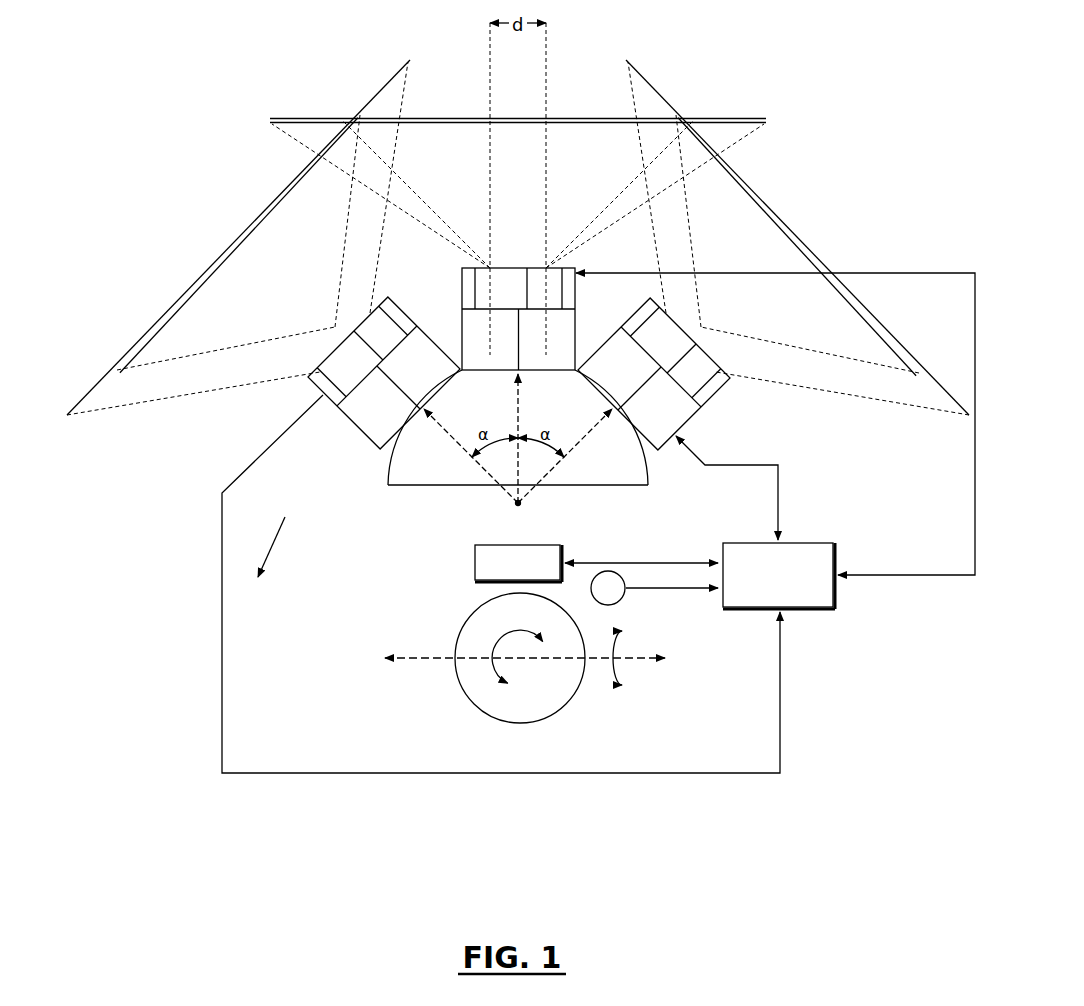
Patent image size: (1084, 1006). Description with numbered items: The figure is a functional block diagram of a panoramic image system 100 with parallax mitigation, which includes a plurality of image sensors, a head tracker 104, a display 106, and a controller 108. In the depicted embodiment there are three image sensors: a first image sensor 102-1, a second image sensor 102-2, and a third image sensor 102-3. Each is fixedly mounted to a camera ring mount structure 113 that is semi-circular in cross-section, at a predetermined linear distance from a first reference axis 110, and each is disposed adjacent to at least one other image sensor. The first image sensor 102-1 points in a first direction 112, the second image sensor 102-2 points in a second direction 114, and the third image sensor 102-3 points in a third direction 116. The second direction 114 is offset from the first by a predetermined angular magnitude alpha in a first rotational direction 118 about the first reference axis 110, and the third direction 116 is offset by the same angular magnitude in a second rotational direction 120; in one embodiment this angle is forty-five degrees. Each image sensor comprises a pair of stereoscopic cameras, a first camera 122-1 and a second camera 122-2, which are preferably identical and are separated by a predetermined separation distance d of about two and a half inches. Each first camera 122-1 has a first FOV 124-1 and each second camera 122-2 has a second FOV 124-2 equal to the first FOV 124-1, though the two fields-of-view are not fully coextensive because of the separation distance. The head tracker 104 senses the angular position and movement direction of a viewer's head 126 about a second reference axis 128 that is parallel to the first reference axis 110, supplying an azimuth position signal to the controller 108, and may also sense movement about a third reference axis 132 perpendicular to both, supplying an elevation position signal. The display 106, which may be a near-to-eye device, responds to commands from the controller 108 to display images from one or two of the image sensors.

The panoramic image system 100 is at (162, 492).
The first image sensor 102-1 is at (461, 322).
The second image sensor 102-2 is at (360, 412).
The third image sensor 102-3 is at (668, 450).
The head tracker 104 is at (622, 600).
The display 106 is at (475, 562).
The controller 108 is at (795, 543).
The first reference axis 110 is at (522, 505).
The first direction 112 is at (514, 408).
The camera ring mount structure 113 is at (455, 490).
The second direction 114 is at (442, 433).
The third direction 116 is at (597, 430).
The first rotational direction 118 is at (271, 548).
The second rotational direction 120 is at (752, 527).
The first camera 122-1 is at (508, 275).
The second camera 122-2 is at (375, 335).
The first FOV 124-1 is at (275, 122).
The second FOV 124-2 is at (400, 70).
The viewer's head 126 is at (578, 695).
The second reference axis 128 is at (520, 660).
The third reference axis 132 is at (415, 660).